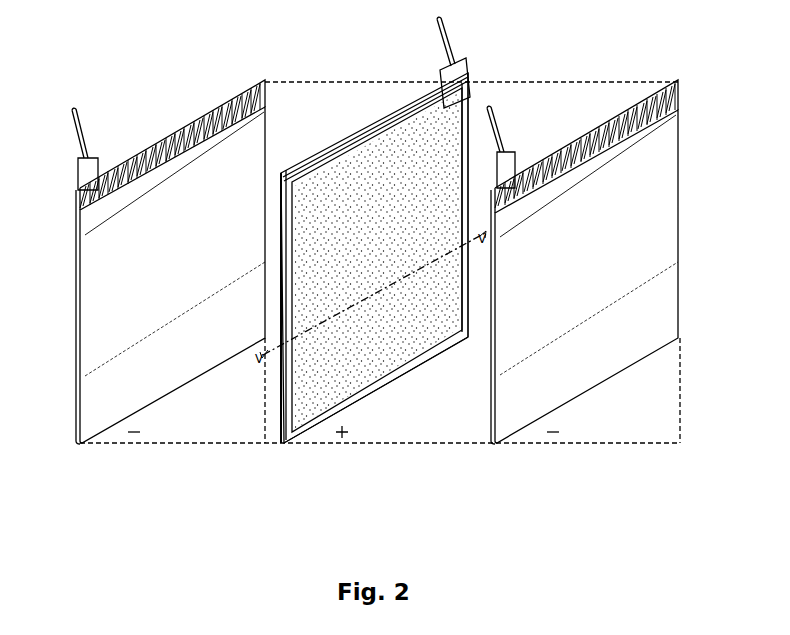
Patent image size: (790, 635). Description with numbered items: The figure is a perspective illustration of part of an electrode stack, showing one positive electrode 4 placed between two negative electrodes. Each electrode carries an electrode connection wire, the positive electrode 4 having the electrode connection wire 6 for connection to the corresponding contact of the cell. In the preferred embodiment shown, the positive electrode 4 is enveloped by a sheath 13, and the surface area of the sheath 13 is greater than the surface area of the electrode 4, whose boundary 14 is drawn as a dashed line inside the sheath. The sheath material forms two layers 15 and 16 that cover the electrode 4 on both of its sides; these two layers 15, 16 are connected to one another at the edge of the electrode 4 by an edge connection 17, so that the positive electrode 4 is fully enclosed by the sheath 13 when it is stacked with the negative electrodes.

The positive electrode 4 is at (344, 269).
The electrode connection wire 6 is at (456, 40).
The sheath 13 is at (325, 395).
The boundary 14 is at (282, 400).
The layer of sheath material 15 is at (350, 362).
The layer of sheath material 16 is at (318, 153).
The edge connection 17 is at (405, 375).